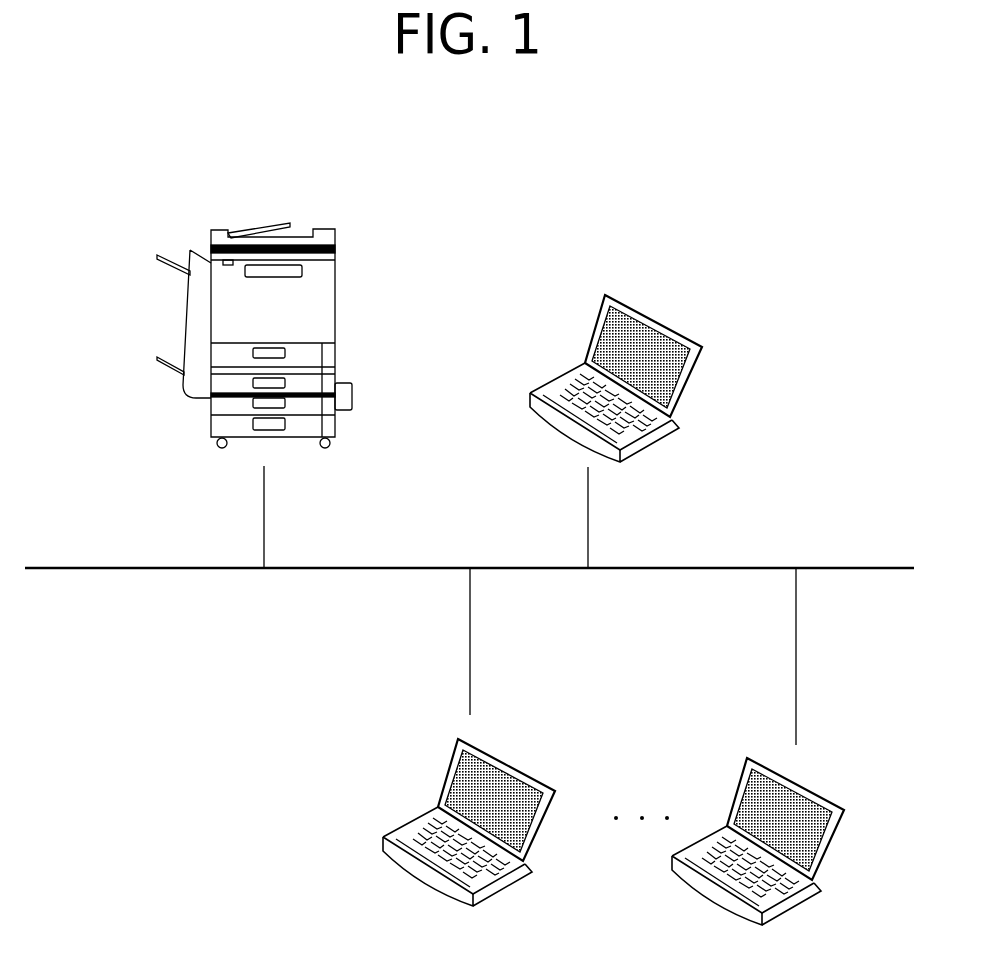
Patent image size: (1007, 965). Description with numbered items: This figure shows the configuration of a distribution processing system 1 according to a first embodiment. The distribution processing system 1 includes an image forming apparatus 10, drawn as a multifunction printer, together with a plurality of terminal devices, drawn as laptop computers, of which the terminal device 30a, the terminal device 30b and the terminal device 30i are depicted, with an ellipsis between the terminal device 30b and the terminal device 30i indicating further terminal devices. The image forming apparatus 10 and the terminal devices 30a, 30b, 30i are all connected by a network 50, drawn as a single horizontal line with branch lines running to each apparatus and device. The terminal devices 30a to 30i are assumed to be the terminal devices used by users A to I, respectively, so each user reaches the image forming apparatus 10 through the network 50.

The distribution processing system 1 is at (818, 167).
The image forming apparatus 10 is at (256, 222).
The terminal device 30a is at (660, 320).
The terminal device 30b is at (513, 765).
The terminal device 30i is at (803, 784).
The network 50 is at (203, 570).